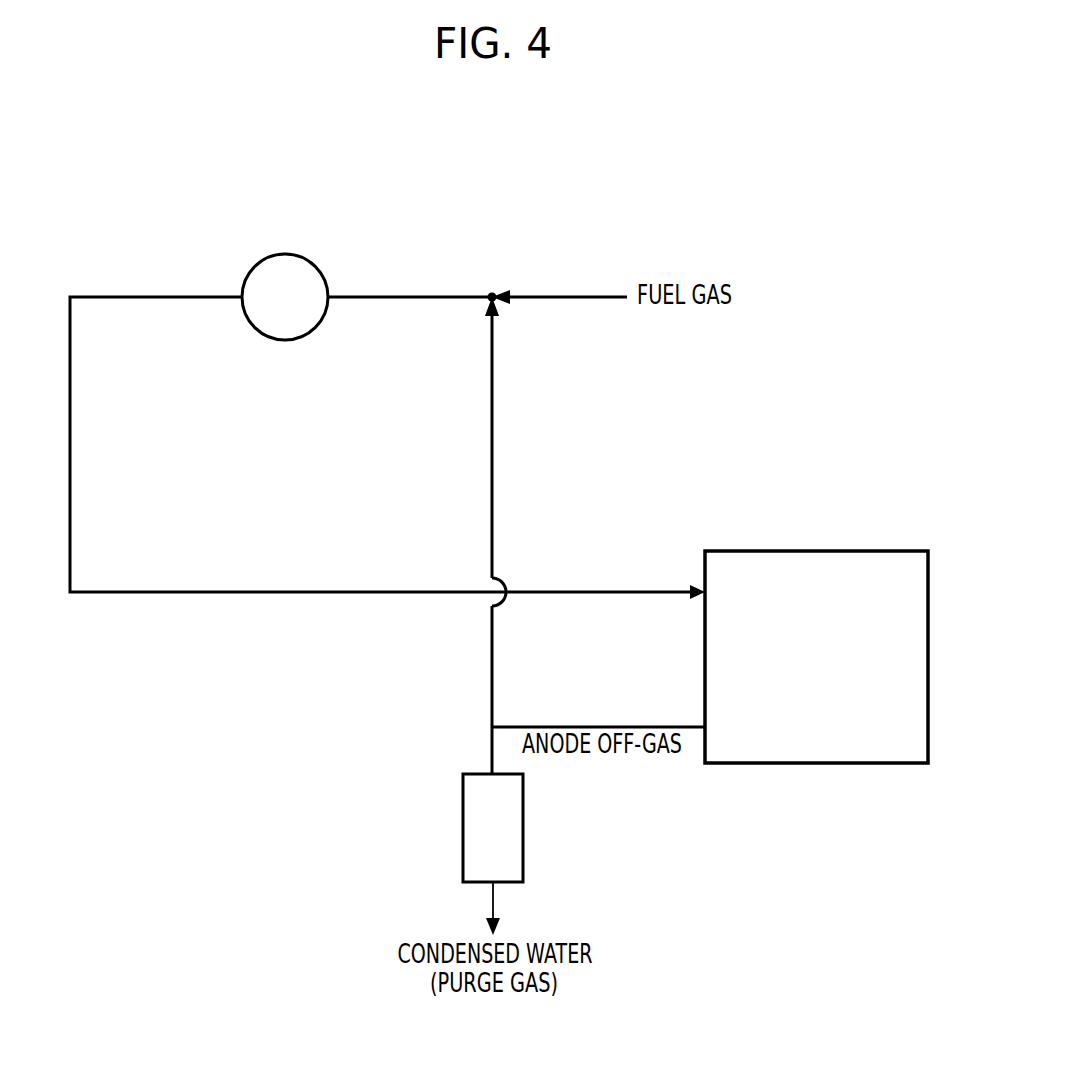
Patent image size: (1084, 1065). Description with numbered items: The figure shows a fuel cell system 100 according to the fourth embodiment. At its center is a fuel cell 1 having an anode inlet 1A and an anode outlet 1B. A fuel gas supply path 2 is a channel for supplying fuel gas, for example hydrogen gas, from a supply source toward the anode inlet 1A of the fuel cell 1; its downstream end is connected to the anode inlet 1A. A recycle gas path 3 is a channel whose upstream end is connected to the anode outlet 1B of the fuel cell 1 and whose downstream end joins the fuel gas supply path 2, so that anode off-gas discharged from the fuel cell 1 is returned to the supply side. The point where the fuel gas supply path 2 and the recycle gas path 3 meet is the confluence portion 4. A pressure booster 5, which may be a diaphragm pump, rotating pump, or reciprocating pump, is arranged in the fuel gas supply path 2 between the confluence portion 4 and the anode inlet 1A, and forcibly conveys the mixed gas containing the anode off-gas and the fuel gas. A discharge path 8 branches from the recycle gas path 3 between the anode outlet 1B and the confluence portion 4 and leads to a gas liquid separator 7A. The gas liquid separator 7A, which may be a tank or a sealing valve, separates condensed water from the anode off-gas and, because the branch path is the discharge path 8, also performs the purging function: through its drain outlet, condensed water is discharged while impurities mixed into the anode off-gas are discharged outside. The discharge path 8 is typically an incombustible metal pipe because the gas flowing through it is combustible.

The fuel cell system 100 is at (639, 179).
The fuel cell 1 is at (822, 551).
The anode inlet 1A is at (705, 592).
The anode outlet 1B is at (705, 727).
The fuel gas supply path 2 is at (166, 593).
The recycle gas path 3 is at (492, 651).
The confluence portion 4 is at (490, 291).
The pressure booster 5 is at (273, 310).
The gas liquid separator 7A is at (514, 845).
The discharge path 8 is at (492, 746).